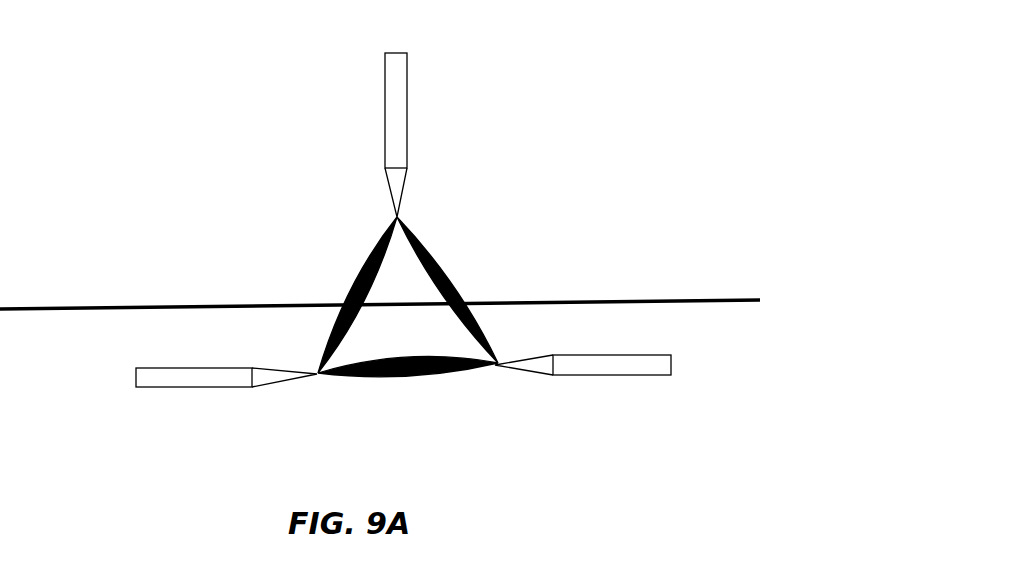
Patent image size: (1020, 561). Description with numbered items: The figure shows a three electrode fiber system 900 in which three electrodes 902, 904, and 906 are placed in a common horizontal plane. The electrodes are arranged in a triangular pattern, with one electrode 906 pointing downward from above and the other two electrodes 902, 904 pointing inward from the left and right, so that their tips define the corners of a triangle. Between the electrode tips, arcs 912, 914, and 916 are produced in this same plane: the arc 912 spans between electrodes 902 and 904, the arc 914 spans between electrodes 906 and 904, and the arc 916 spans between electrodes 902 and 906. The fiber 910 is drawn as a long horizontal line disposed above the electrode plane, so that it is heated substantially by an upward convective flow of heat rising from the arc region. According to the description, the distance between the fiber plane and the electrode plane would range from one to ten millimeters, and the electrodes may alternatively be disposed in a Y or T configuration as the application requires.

The three electrode fiber system 900 is at (136, 45).
The electrode 902 is at (194, 387).
The electrode 904 is at (608, 375).
The electrode 906 is at (407, 110).
The fiber 910 is at (123, 305).
The arc 912 is at (390, 377).
The arc 914 is at (447, 280).
The arc 916 is at (370, 258).